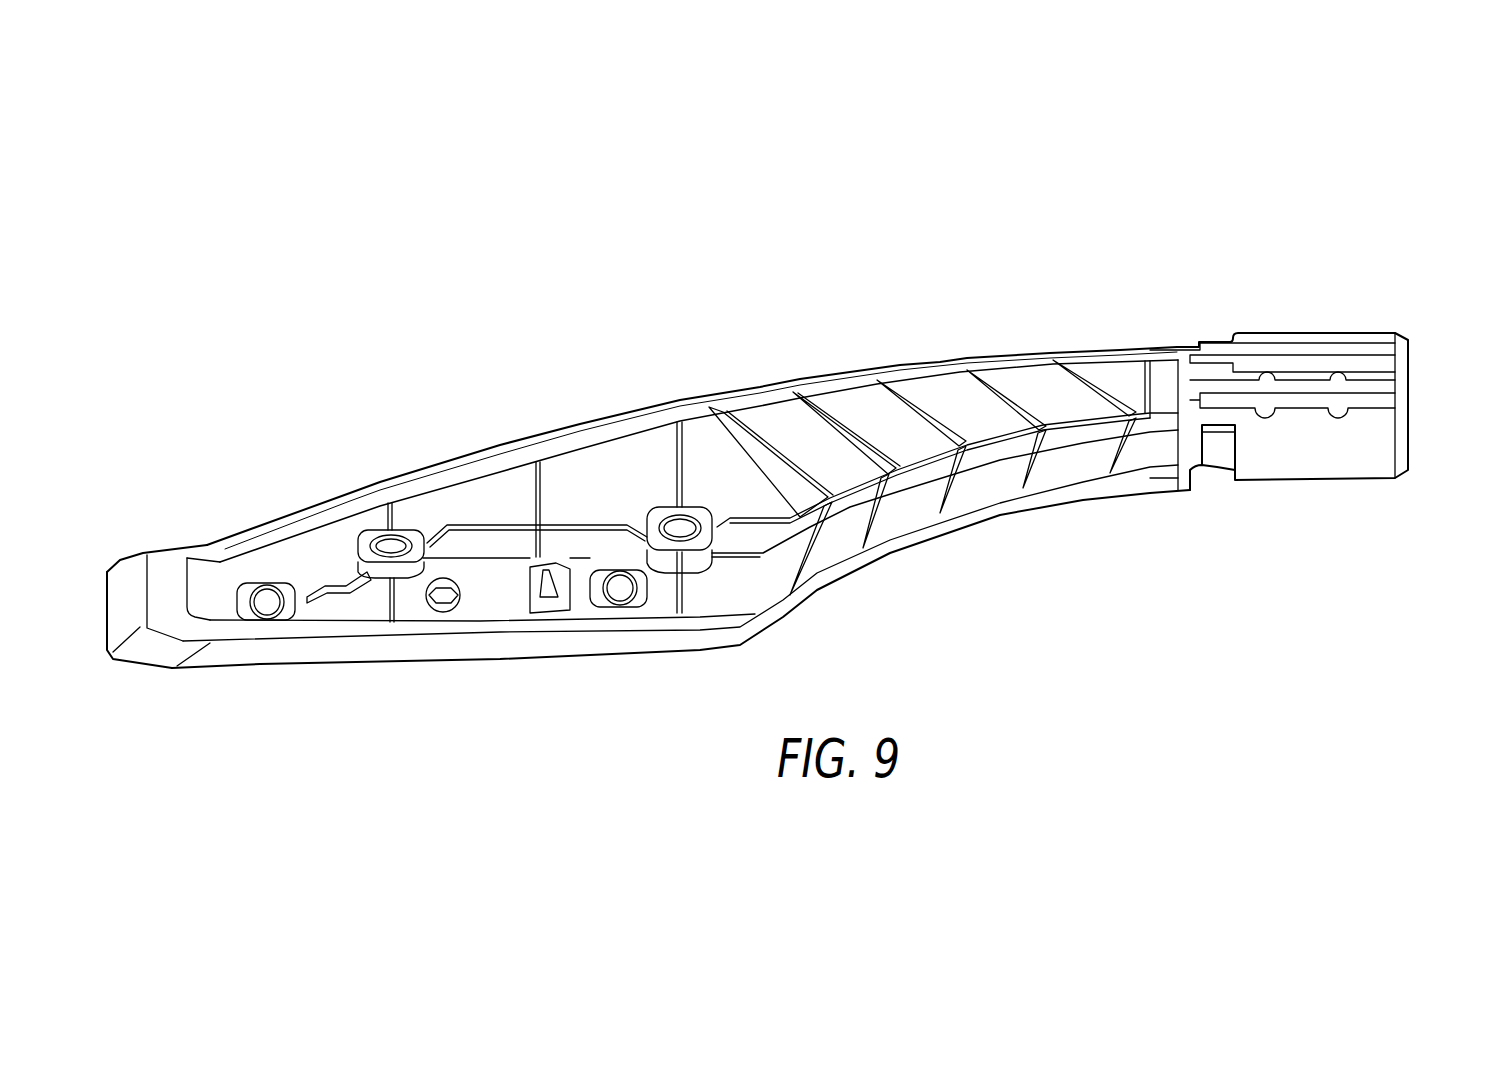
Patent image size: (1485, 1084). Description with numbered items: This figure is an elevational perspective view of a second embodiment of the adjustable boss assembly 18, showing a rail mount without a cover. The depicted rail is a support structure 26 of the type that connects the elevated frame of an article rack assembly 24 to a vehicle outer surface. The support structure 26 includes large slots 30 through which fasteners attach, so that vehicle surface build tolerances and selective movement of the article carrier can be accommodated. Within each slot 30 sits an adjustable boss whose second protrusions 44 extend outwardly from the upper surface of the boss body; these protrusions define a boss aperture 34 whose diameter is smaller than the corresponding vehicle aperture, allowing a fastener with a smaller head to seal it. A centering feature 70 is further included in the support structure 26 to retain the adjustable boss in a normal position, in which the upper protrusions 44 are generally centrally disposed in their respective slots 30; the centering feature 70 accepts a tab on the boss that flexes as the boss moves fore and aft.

The adjustable boss assembly 18 is at (1391, 185).
The article rack assembly 24 is at (973, 356).
The support structure 26 is at (517, 440).
The slot 30 is at (237, 603).
The boss aperture 34 is at (263, 617).
The second protrusion 44 is at (293, 607).
The centering feature 70 is at (547, 600).